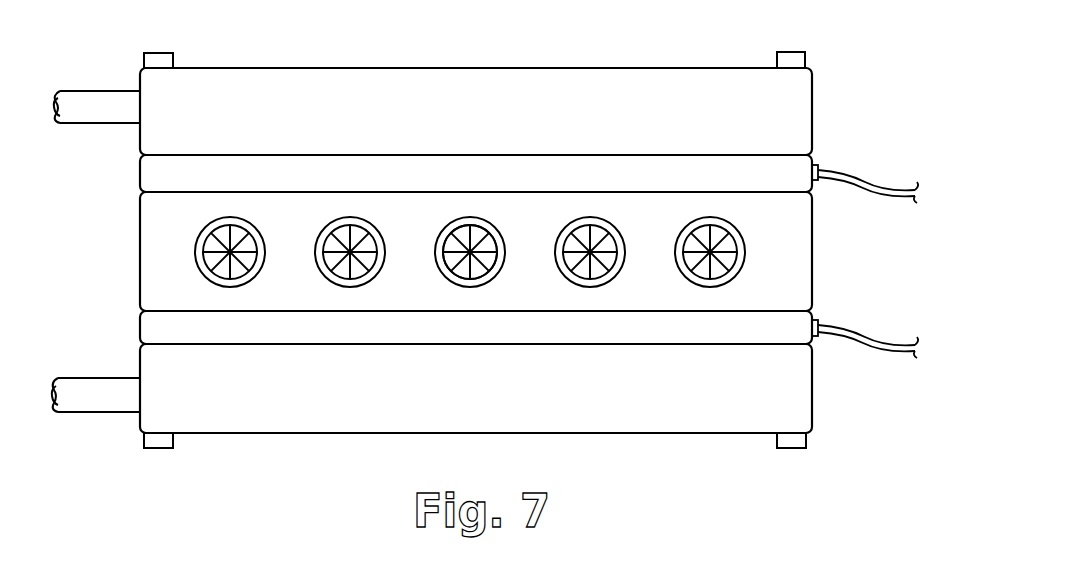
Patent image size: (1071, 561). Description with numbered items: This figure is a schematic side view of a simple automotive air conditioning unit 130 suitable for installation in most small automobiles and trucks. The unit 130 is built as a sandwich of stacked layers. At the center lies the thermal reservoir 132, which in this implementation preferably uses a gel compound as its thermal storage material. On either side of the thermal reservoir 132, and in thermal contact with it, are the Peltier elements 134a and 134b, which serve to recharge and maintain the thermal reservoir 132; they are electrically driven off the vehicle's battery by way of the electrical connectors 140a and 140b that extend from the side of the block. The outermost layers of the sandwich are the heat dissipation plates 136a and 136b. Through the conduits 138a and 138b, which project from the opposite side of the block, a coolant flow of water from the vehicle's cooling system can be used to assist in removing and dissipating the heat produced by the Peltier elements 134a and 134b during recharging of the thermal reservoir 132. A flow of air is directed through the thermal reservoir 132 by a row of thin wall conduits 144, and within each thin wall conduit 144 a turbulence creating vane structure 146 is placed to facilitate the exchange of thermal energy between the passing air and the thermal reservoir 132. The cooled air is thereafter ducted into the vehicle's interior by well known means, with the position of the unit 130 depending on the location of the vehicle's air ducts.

The air conditioning unit 130 is at (818, 90).
The thermal reservoir 132 is at (547, 225).
The Peltier element 134a is at (577, 172).
The Peltier element 134b is at (327, 332).
The heat dissipation plate 136a is at (490, 128).
The heat dissipation plate 136b is at (490, 400).
The conduit 138a is at (90, 120).
The conduit 138b is at (95, 383).
The electrical connector 140a is at (870, 187).
The electrical connector 140b is at (870, 342).
The thin wall conduit 144 is at (265, 256).
The turbulence creating vane structure 146 is at (474, 262).